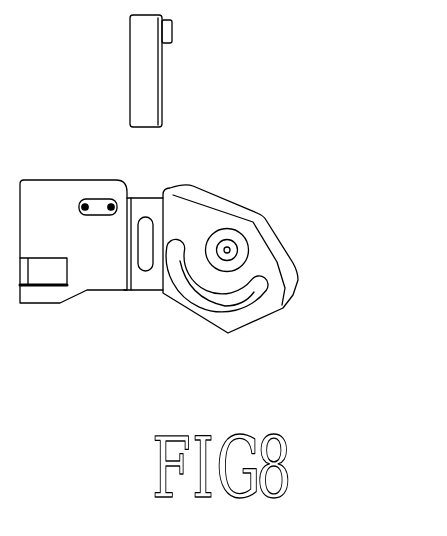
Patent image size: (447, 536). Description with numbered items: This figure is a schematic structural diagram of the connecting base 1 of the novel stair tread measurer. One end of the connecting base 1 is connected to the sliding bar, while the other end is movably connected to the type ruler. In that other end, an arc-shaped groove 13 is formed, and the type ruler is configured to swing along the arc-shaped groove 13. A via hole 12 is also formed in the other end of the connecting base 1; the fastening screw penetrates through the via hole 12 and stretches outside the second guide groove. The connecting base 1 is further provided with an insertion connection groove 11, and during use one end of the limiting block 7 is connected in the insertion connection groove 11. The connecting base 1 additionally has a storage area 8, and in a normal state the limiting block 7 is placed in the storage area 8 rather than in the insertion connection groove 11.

The connecting base 1 is at (206, 197).
The limiting block 7 is at (153, 85).
The storage area 8 is at (228, 282).
The insertion connection groove 11 is at (86, 198).
The via hole 12 is at (237, 245).
The arc-shaped groove 13 is at (242, 309).